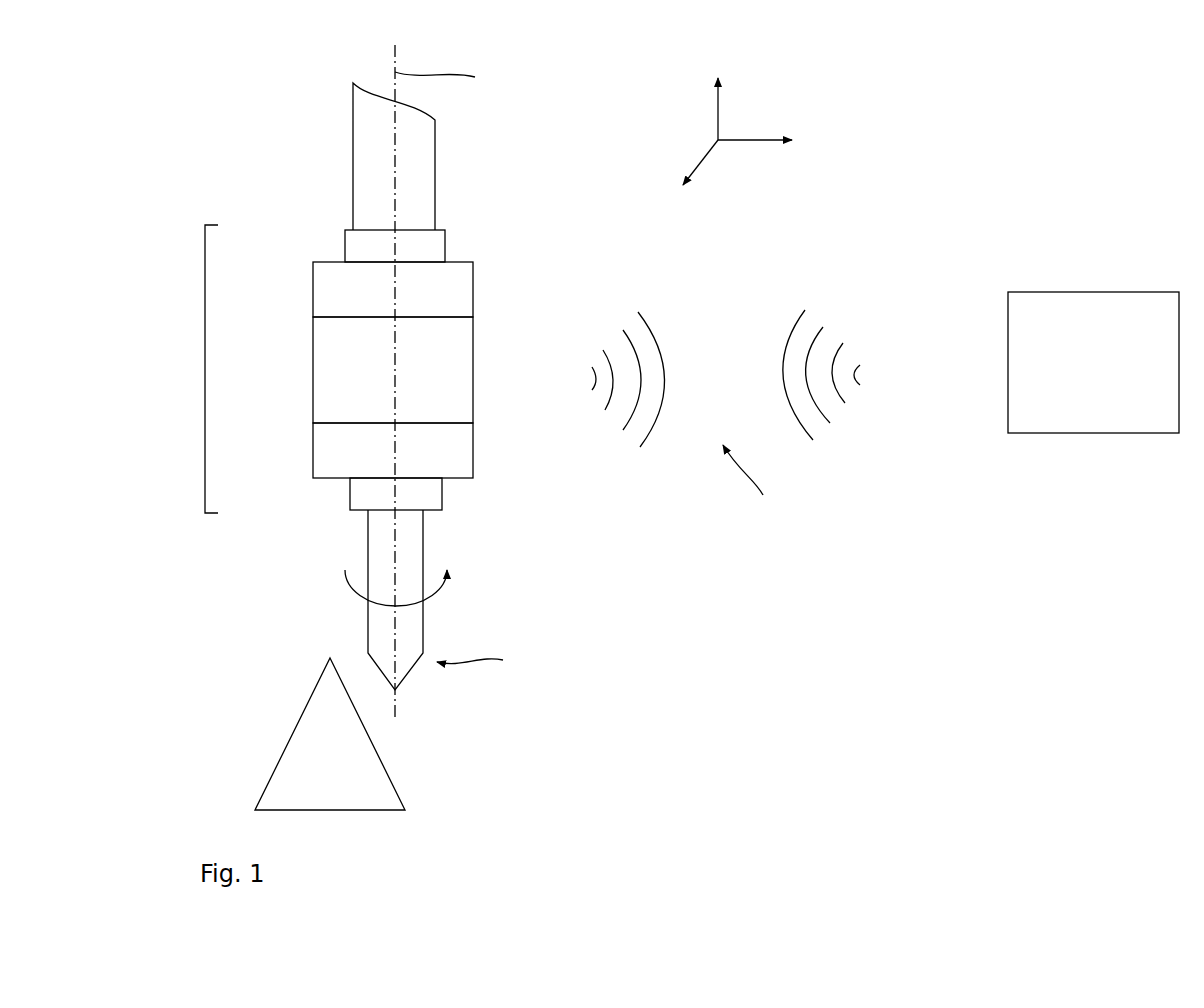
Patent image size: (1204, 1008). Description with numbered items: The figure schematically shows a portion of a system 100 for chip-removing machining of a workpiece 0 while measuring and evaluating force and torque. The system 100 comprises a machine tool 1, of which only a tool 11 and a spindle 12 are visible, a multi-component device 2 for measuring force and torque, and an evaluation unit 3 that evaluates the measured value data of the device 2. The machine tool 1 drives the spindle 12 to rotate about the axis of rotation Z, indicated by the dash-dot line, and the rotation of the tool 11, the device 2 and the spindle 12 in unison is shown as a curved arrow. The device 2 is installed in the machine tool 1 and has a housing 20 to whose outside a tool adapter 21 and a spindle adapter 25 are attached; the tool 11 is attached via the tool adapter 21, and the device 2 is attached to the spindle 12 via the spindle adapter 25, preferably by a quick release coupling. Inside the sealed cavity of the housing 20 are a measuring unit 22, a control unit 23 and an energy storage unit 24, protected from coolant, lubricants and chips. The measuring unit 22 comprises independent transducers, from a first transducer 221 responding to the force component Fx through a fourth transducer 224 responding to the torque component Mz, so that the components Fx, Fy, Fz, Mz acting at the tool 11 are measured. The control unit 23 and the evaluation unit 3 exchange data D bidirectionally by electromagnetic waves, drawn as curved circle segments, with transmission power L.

The workpiece 0 is at (300, 762).
The machine tool 1 is at (245, 110).
The device 2 is at (205, 372).
The evaluation unit 3 is at (1100, 312).
The tool 11 is at (378, 555).
The spindle 12 is at (370, 173).
The housing 20 is at (490, 243).
The tool adapter 21 is at (365, 497).
The measuring unit 22 is at (340, 450).
The control unit 23 is at (340, 373).
The energy storage unit 24 is at (340, 297).
The spindle adapter 25 is at (365, 247).
The first transducer 221 is at (517, 486).
The fourth transducer 224 is at (458, 450).
The system 100 is at (1067, 110).